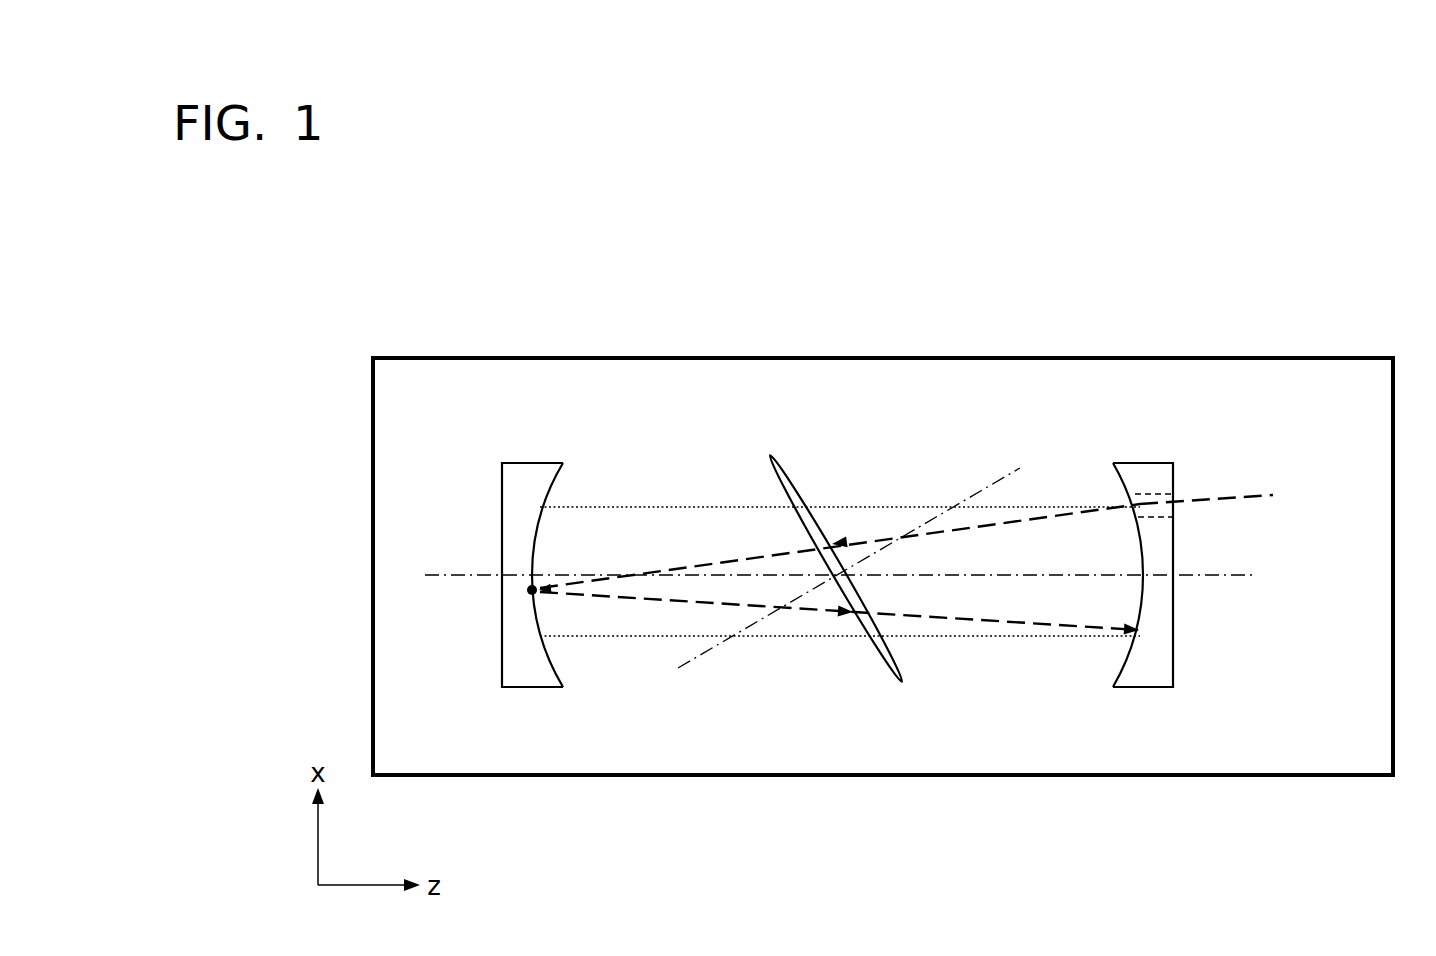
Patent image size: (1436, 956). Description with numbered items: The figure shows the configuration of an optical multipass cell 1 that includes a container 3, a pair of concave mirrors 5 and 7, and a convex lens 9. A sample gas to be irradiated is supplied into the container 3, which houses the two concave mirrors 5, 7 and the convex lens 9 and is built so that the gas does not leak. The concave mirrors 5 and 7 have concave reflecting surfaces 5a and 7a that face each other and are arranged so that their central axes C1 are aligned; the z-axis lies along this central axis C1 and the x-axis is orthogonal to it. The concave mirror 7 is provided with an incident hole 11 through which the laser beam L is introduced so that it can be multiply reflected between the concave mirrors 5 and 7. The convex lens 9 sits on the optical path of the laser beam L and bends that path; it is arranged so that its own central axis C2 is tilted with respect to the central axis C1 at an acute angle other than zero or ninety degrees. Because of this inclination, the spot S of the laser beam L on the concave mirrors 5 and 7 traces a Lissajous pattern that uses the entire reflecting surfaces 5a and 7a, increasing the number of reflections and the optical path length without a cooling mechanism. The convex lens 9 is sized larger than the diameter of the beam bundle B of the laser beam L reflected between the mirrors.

The optical multipass cell 1 is at (422, 262).
The container 3 is at (930, 358).
The concave mirror 5 is at (578, 661).
The reflecting surface 5a is at (547, 662).
The concave mirror 7 is at (1130, 558).
The reflecting surface 7a is at (1125, 667).
The convex lens 9 is at (877, 656).
The incident hole 11 is at (1176, 505).
The spot S is at (535, 588).
The beam bundle B is at (648, 507).
The central axis C1 is at (1022, 573).
The central axis C2 is at (970, 497).
The laser beam L is at (1250, 497).